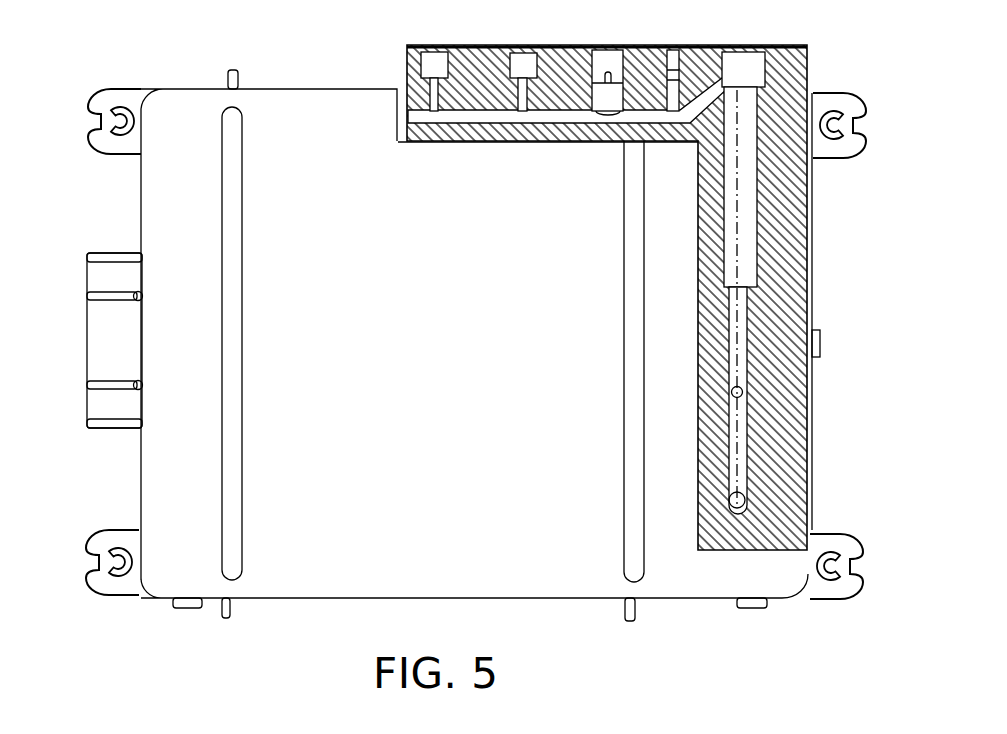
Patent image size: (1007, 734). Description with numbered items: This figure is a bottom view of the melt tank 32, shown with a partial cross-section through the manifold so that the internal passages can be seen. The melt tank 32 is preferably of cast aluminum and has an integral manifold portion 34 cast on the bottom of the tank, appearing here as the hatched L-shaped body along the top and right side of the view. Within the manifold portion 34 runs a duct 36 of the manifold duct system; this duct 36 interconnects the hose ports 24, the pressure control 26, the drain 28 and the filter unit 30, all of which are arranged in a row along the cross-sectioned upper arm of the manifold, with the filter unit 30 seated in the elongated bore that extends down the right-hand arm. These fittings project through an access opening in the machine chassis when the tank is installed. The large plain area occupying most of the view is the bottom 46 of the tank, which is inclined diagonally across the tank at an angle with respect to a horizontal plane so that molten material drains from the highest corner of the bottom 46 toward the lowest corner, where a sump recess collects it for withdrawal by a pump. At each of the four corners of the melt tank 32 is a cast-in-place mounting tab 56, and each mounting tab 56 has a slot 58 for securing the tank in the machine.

The hose ports 24 is at (523, 45).
The pressure control 26 is at (597, 47).
The drain 28 is at (676, 47).
The filter unit 30 is at (744, 47).
The melt tank 32 is at (333, 70).
The manifold portion 34 is at (808, 271).
The duct 36 is at (563, 120).
The bottom 46 is at (450, 367).
The mounting tab 56 is at (850, 93).
The slot 58 is at (860, 125).